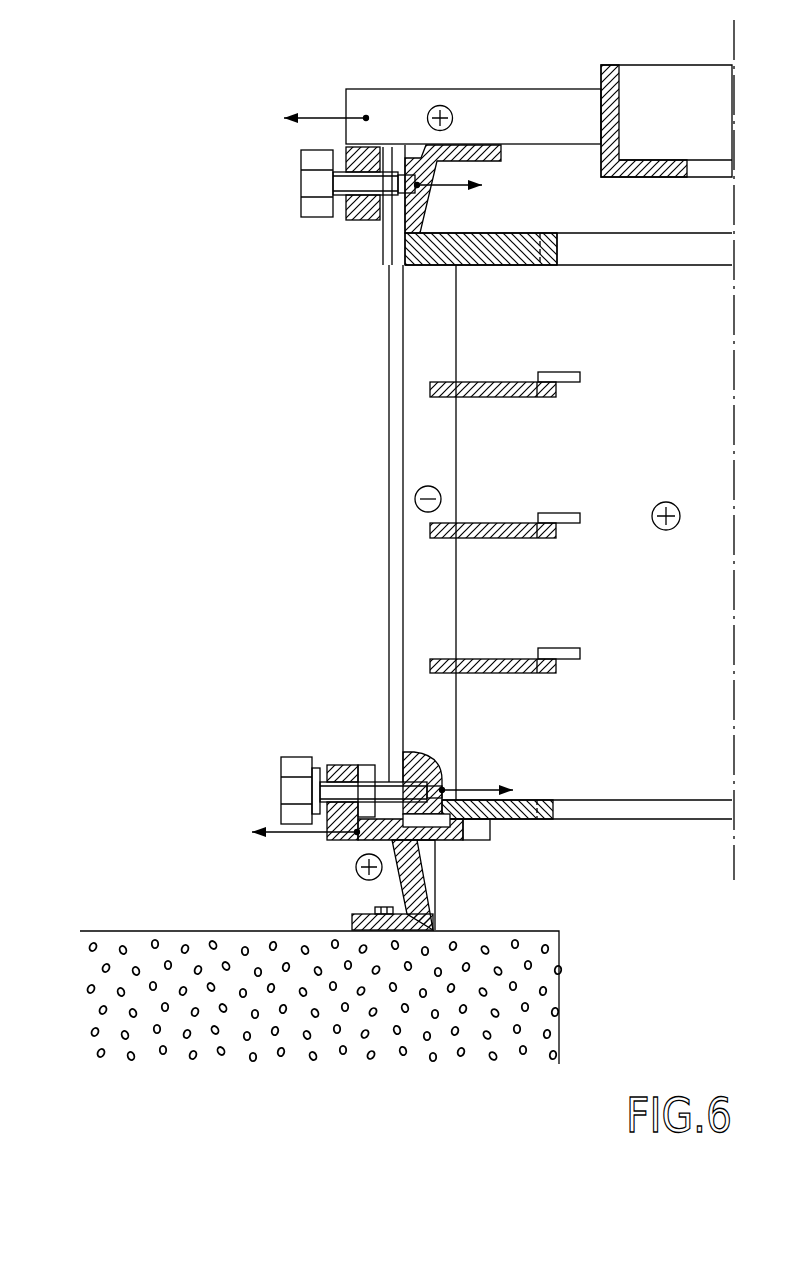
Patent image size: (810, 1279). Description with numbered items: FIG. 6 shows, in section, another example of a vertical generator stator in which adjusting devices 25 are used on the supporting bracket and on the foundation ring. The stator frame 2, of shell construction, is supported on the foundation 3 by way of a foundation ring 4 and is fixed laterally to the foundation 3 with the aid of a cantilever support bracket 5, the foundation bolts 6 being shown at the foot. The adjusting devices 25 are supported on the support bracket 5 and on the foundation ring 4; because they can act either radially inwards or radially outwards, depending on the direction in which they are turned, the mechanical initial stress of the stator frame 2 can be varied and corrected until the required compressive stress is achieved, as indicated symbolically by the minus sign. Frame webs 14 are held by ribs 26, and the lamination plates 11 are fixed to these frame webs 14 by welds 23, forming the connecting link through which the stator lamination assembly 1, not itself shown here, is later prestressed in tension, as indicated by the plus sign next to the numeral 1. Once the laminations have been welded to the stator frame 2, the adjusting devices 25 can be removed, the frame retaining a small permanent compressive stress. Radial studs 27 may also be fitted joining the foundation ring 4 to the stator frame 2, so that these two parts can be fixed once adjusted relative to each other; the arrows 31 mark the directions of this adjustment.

The stator lamination assembly 1 is at (678, 518).
The stator frame 2 is at (495, 247).
The foundation 3 is at (238, 1025).
The foundation ring 4 is at (391, 859).
The cantilever support bracket 5 is at (404, 107).
The foundation bolts 6 is at (366, 907).
The lamination plates 11 is at (572, 377).
The frame web 14 is at (476, 386).
The welds 23 is at (527, 377).
The adjusting devices 25 is at (336, 183).
The ribs 26 is at (421, 455).
The radial studs 27 is at (415, 817).
The direction of adjustment 31 is at (302, 112).